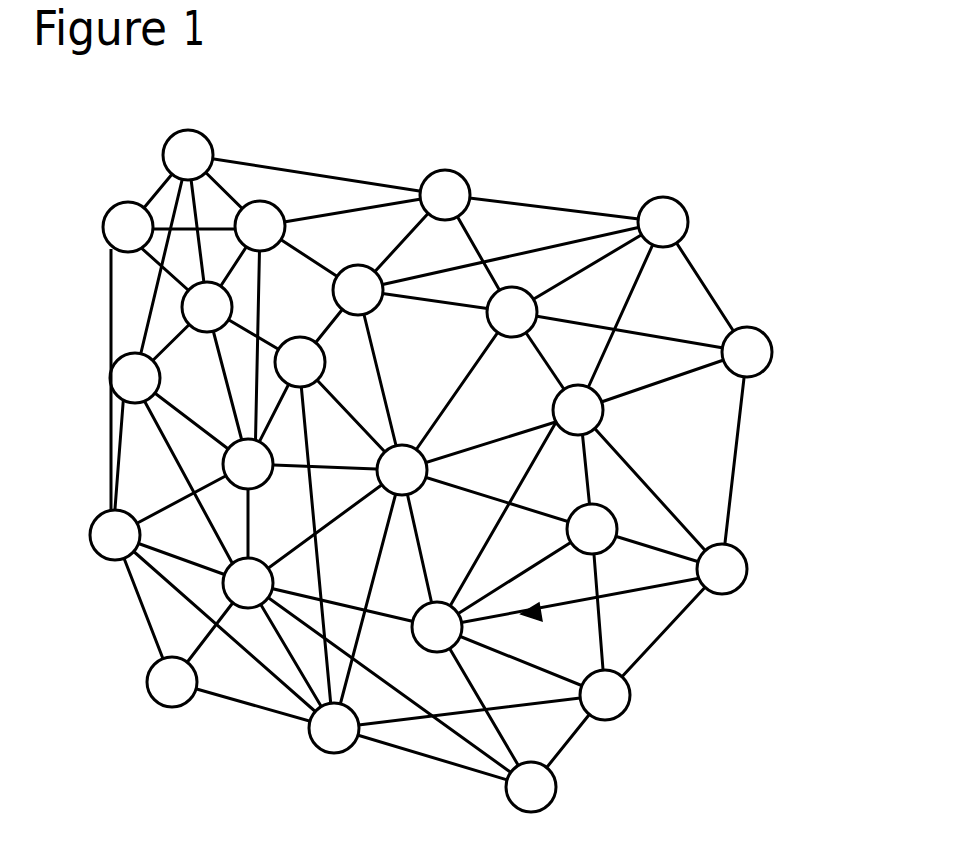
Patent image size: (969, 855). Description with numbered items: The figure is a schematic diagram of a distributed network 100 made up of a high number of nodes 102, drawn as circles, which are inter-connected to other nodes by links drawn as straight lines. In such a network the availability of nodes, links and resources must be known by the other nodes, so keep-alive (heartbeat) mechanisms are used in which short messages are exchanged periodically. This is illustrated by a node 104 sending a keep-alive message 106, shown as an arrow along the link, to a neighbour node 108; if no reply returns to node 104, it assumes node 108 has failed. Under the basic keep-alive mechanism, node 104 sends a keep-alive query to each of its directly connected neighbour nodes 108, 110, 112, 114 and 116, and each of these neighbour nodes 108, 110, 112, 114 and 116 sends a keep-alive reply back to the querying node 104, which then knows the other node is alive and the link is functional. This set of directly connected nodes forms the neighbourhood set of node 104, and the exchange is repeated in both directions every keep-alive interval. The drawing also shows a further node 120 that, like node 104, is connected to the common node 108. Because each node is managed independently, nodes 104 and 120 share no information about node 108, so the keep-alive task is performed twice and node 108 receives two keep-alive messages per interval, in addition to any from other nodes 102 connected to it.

The distributed network 100 is at (516, 71).
The nodes 102 is at (681, 197).
The node 104 is at (742, 585).
The keep-alive message 106 is at (651, 594).
The neighbour node 108 is at (427, 650).
The neighbour node 110 is at (618, 717).
The neighbour node 112 is at (602, 418).
The neighbour node 114 is at (753, 344).
The neighbour node 116 is at (612, 508).
The node 120 is at (232, 598).